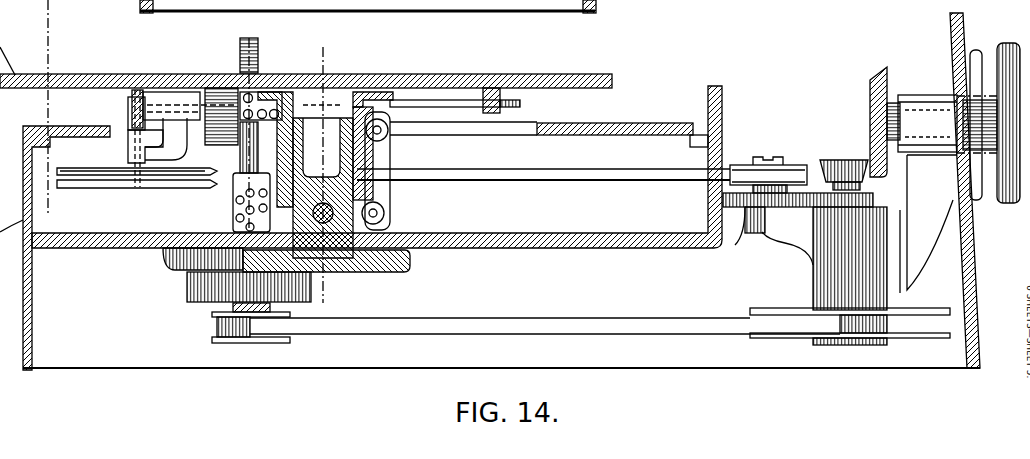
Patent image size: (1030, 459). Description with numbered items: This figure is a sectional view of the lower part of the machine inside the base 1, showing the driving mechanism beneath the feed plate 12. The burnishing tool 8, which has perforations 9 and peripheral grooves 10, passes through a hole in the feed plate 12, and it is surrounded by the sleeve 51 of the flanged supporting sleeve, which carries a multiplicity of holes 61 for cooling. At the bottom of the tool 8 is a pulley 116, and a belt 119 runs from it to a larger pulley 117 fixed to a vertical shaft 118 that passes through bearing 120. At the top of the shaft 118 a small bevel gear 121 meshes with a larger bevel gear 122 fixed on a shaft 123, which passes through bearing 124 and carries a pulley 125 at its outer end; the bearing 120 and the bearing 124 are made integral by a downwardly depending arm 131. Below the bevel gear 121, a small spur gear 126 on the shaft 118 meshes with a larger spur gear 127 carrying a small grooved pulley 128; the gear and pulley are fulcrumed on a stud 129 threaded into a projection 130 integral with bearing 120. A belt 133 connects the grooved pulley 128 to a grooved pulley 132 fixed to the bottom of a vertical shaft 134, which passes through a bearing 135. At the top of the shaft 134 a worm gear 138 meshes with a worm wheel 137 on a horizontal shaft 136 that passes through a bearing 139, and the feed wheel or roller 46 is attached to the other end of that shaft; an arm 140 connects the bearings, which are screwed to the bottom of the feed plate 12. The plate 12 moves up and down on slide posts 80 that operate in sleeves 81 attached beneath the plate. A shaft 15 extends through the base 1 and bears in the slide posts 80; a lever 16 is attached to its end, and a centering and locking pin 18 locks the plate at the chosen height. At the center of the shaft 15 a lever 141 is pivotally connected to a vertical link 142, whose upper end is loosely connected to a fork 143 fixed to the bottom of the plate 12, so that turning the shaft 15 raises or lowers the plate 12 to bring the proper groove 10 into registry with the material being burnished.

The base 1 is at (977, 262).
The burnishing tool 8 is at (233, 217).
The perforations 9 is at (238, 200).
The peripheral grooves 10 is at (257, 72).
The feed plate 12 is at (438, 75).
The shaft 15 is at (377, 275).
The lever 16 is at (501, 228).
The centering and locking pin 18 is at (50, 107).
The feed wheel or roller 46 is at (230, 73).
The sleeve 51 is at (261, 119).
The holes or perforations 61 is at (270, 88).
The slide posts 80 is at (308, 130).
The sleeves 81 is at (363, 152).
The pulley 116 is at (217, 338).
The larger pulley 117 is at (757, 308).
The vertical shaft 118 is at (857, 347).
The belt 119 is at (477, 323).
The bearing 120 is at (842, 277).
The small bevel gear 121 is at (827, 167).
The larger bevel gear 122 is at (875, 82).
The shaft 123 is at (870, 122).
The bearing 124 is at (922, 97).
The pulley 125 is at (1000, 50).
The small spur gear 126 is at (873, 195).
The larger spur gear 127 is at (740, 205).
The small grooved pulley 128 is at (745, 173).
The stud 129 is at (763, 158).
The projection 130 is at (762, 232).
The downwardly depending arm 131 is at (928, 224).
The grooved pulley 132 is at (125, 180).
The belt 133 is at (540, 180).
The vertical shaft 134 is at (137, 187).
The bearing 135 is at (128, 155).
The horizontal shaft 136 is at (128, 97).
The worm wheel 137 is at (128, 118).
The worm gear 138 is at (163, 105).
The bearing 139 is at (185, 97).
The arm 140 is at (180, 148).
The lever 141 is at (360, 208).
The link 142 is at (383, 162).
The fork 143 is at (383, 100).